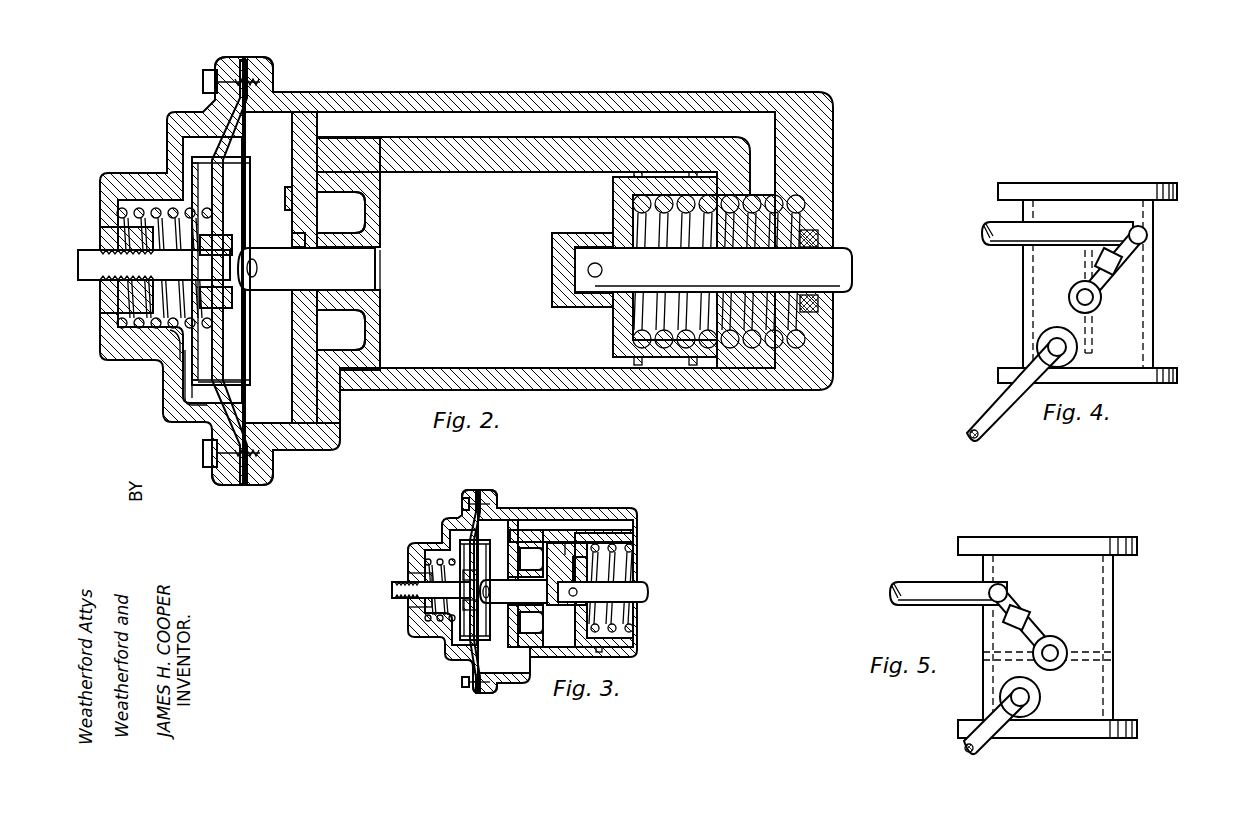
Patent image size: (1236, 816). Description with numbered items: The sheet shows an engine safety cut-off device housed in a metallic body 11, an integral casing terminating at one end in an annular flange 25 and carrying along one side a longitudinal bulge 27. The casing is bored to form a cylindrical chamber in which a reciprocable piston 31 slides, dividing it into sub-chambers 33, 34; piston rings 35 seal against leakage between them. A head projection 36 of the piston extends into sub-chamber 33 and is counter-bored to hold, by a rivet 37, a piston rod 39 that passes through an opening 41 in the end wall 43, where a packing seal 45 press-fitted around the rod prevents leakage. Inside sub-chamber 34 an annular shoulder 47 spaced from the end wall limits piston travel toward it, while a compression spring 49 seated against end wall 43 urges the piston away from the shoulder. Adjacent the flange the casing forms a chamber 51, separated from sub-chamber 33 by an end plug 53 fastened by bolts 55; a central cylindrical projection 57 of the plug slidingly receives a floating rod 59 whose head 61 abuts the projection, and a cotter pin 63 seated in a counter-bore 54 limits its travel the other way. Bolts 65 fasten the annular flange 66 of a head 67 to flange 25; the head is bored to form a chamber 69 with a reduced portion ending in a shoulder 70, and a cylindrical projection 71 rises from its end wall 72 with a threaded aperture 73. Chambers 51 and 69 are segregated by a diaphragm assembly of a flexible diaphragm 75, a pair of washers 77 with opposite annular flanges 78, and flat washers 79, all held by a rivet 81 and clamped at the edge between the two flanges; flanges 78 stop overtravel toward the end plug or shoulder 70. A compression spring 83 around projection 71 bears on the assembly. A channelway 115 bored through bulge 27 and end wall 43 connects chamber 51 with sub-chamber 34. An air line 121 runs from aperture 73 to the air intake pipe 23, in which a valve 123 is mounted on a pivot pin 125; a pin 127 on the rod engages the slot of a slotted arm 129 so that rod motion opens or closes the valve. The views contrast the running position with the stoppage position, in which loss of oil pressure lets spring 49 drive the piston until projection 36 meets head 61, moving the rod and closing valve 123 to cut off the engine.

In FIG. 2, the body 11 is at (398, 380).
In FIG. 3, the body 11 is at (640, 660).
In FIG. 4, the air intake pipe 23 is at (1110, 183).
In FIG. 5, the air intake pipe 23 is at (1082, 540).
In FIG. 2, the annular flange 25 is at (265, 70).
In FIG. 3, the annular flange 25 is at (494, 498).
In FIG. 2, the longitudinal bulge 27 is at (598, 92).
In FIG. 3, the longitudinal bulge 27 is at (597, 508).
In FIG. 2, the piston 31 is at (613, 195).
In FIG. 3, the piston 31 is at (580, 635).
In FIG. 2, the sub-chamber 33 is at (548, 372).
In FIG. 3, the sub-chamber 33 is at (566, 542).
In FIG. 2, the sub-chamber 34 is at (633, 325).
In FIG. 3, the sub-chamber 34 is at (630, 557).
In FIG. 2, the piston rings 35 is at (638, 366).
In FIG. 3, the piston rings 35 is at (640, 650).
In FIG. 2, the head projection 36 is at (550, 265).
In FIG. 3, the head projection 36 is at (567, 574).
In FIG. 2, the rivet 37 is at (603, 270).
In FIG. 3, the rivet 37 is at (578, 592).
In FIG. 2, the piston rod 39 is at (850, 280).
In FIG. 3, the piston rod 39 is at (650, 590).
In FIG. 4, the piston rod 39 is at (983, 241).
In FIG. 5, the piston rod 39 is at (925, 583).
In FIG. 2, the opening 41 is at (818, 240).
In FIG. 2, the end wall 43 is at (833, 175).
In FIG. 2, the packing seal 45 is at (818, 305).
In FIG. 2, the annular shoulder 47 is at (692, 366).
In FIG. 2, the compression spring 49 is at (815, 205).
In FIG. 3, the compression spring 49 is at (635, 628).
In FIG. 2, the chamber 51 is at (300, 125).
In FIG. 3, the chamber 51 is at (485, 660).
In FIG. 2, the end plug 53 is at (292, 218).
In FIG. 3, the end plug 53 is at (512, 550).
In FIG. 2, the counter-bore 54 is at (292, 241).
In FIG. 2, the bolts 55 is at (285, 198).
In FIG. 2, the cylindrical projection 57 is at (367, 235).
In FIG. 3, the cylindrical projection 57 is at (531, 559).
In FIG. 2, the floating rod 59 is at (297, 290).
In FIG. 3, the floating rod 59 is at (531, 623).
In FIG. 2, the head 61 is at (377, 268).
In FIG. 3, the head 61 is at (553, 608).
In FIG. 2, the cotter pin 63 is at (259, 267).
In FIG. 3, the cotter pin 63 is at (490, 592).
In FIG. 2, the bolts 65 is at (203, 84).
In FIG. 3, the bolts 65 is at (462, 503).
In FIG. 2, the annular flange 66 is at (232, 480).
In FIG. 3, the annular flange 66 is at (482, 492).
In FIG. 2, the head 67 is at (167, 165).
In FIG. 3, the head 67 is at (445, 650).
In FIG. 2, the chamber 69 is at (183, 143).
In FIG. 3, the chamber 69 is at (460, 530).
In FIG. 2, the shoulder 70 is at (196, 378).
In FIG. 2, the cylindrical projection 71 is at (172, 330).
In FIG. 2, the end wall 72 is at (100, 203).
In FIG. 3, the end wall 72 is at (408, 620).
In FIG. 2, the threaded aperture 73 is at (112, 245).
In FIG. 3, the threaded aperture 73 is at (420, 590).
In FIG. 2, the flexible diaphragm 75 is at (228, 147).
In FIG. 3, the flexible diaphragm 75 is at (463, 673).
In FIG. 2, the washers 77 is at (238, 355).
In FIG. 3, the washers 77 is at (496, 645).
In FIG. 2, the annular flanges 78 is at (245, 381).
In FIG. 2, the flat washers 79 is at (225, 318).
In FIG. 2, the rivet 81 is at (222, 240).
In FIG. 3, the rivet 81 is at (470, 590).
In FIG. 2, the compression spring 83 is at (115, 327).
In FIG. 2, the channelway 115 is at (693, 122).
In FIG. 3, the channelway 115 is at (643, 528).
In FIG. 2, the air line 121 is at (90, 282).
In FIG. 3, the air line 121 is at (400, 582).
In FIG. 4, the air line 121 is at (990, 413).
In FIG. 5, the air line 121 is at (965, 746).
In FIG. 4, the valve 123 is at (1088, 340).
In FIG. 5, the valve 123 is at (1072, 668).
In FIG. 4, the pivot pin 125 is at (1094, 297).
In FIG. 5, the pivot pin 125 is at (1052, 650).
In FIG. 4, the pin 127 is at (1148, 236).
In FIG. 5, the pin 127 is at (1007, 590).
In FIG. 4, the slotted arm 129 is at (1110, 275).
In FIG. 5, the slotted arm 129 is at (1040, 622).